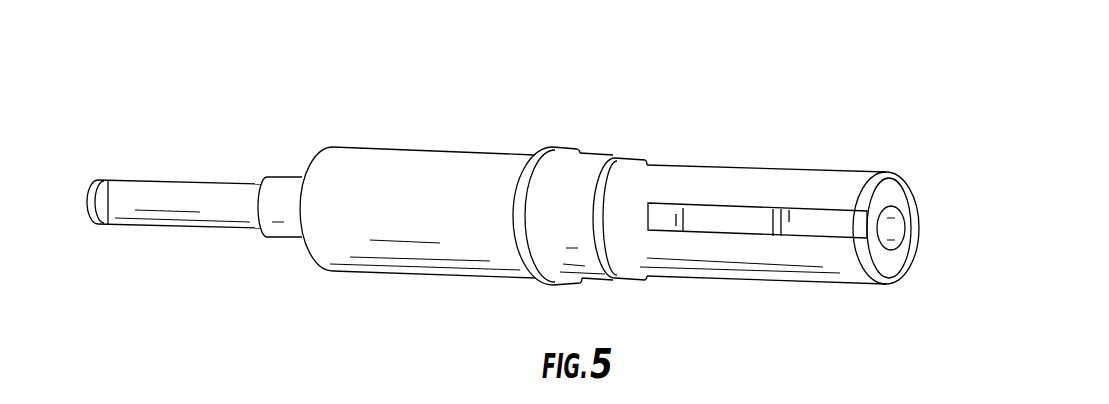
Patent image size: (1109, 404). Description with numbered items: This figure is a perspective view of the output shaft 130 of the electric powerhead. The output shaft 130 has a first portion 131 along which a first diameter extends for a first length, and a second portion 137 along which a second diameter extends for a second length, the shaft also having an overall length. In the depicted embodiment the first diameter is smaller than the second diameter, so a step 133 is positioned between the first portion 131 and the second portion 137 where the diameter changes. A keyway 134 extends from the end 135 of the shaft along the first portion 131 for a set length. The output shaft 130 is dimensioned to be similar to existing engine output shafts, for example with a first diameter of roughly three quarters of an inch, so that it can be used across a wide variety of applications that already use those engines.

The output shaft 130 is at (150, 95).
The first portion 131 is at (724, 165).
The step 133 is at (614, 156).
The keyway 134 is at (775, 210).
The end 135 is at (892, 195).
The second portion 137 is at (469, 149).